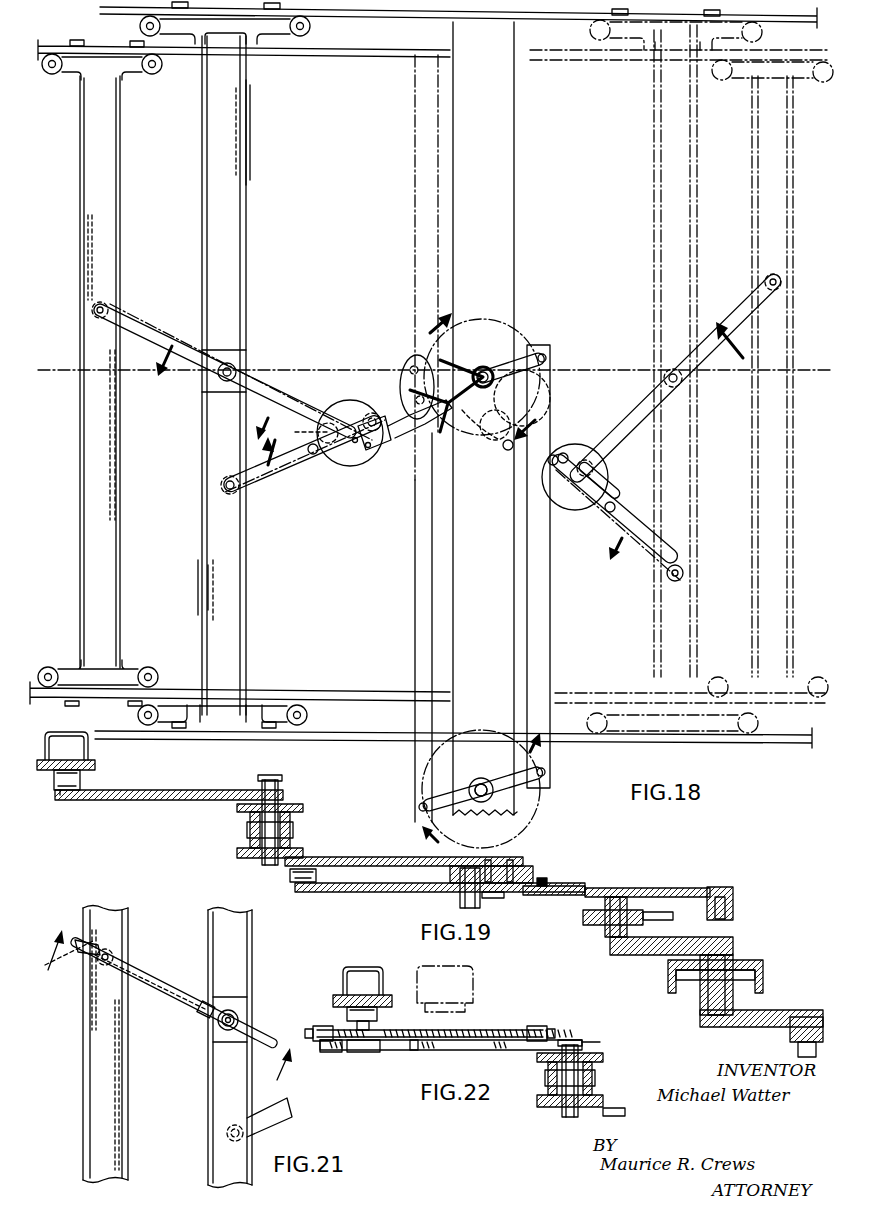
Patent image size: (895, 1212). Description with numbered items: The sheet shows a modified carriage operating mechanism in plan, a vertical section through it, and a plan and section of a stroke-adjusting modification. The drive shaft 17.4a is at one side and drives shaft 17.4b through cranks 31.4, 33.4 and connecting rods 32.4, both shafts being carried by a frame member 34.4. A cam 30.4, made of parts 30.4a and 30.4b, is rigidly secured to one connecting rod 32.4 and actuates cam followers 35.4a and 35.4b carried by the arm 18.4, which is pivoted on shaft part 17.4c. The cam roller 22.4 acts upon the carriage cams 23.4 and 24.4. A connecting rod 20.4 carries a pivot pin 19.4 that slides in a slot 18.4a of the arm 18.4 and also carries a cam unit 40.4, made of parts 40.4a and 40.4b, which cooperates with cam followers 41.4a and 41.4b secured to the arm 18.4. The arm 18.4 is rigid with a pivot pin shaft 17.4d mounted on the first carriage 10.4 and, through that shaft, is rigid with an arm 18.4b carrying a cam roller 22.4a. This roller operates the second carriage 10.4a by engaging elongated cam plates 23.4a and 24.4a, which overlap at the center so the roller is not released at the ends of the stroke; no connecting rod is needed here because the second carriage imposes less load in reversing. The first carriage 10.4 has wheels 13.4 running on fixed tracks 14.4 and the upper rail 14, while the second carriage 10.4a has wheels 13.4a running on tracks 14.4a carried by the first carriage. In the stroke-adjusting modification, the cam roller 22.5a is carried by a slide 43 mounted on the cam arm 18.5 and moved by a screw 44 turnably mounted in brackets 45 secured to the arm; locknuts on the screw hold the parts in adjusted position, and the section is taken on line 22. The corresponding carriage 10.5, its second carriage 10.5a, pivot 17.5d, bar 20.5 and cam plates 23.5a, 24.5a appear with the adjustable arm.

In FIG. 18, the upper track rail 14 is at (380, 18).
In FIG. 18, the wheels 13.4 is at (305, 30).
In FIG. 18, the wheels 13.4a is at (160, 74).
In FIG. 18, the fixed tracks 14.4 is at (345, 739).
In FIG. 18, the tracks 14.4a is at (331, 53).
In FIG. 18, the first carriage 10.4 is at (246, 543).
In FIG. 19, the first carriage 10.4 is at (293, 830).
In FIG. 18, the second carriage 10.4a is at (118, 560).
In FIG. 19, the second carriage 10.4a is at (90, 750).
In FIG. 18, the carriage cam 24.4 is at (248, 132).
In FIG. 18, the elongated cam plate 24.4a is at (92, 235).
In FIG. 19, the elongated cam plate 24.4a is at (35, 808).
In FIG. 18, the carriage cam 23.4 is at (215, 612).
In FIG. 18, the elongated cam plate 23.4a is at (120, 435).
In FIG. 19, the elongated cam plate 23.4a is at (82, 780).
In FIG. 18, the cam roller 22.4 is at (220, 488).
In FIG. 19, the cam roller 22.4 is at (316, 875).
In FIG. 18, the cam roller 22.4a is at (105, 300).
In FIG. 19, the cam roller 22.4a is at (40, 800).
In FIG. 18, the arm 18.4 is at (385, 405).
In FIG. 19, the arm 18.4 is at (645, 888).
In FIG. 18, the slot 18.4a is at (598, 478).
In FIG. 19, the slot 18.4a is at (493, 895).
In FIG. 18, the arm 18.4b is at (132, 330).
In FIG. 19, the arm 18.4b is at (160, 802).
In FIG. 18, the drive shaft 17.4a is at (505, 800).
In FIG. 18, the shaft 17.4b is at (492, 368).
In FIG. 19, the shaft 17.4b is at (735, 966).
In FIG. 18, the shaft part 17.4c is at (505, 360).
In FIG. 19, the shaft part 17.4c is at (726, 890).
In FIG. 18, the pivot pin shaft 17.4d is at (233, 368).
In FIG. 19, the pivot pin shaft 17.4d is at (276, 788).
In FIG. 18, the pivot pin 19.4 is at (585, 456).
In FIG. 19, the pivot pin 19.4 is at (460, 878).
In FIG. 18, the connecting rod 20.4 is at (277, 400).
In FIG. 19, the connecting rod 20.4 is at (362, 860).
In FIG. 18, the cam 30.4 is at (378, 460).
In FIG. 19, the cam 30.4 is at (583, 926).
In FIG. 19, the cam part 30.4a is at (583, 916).
In FIG. 19, the cam part 30.4b is at (578, 945).
In FIG. 18, the crank 31.4 is at (530, 795).
In FIG. 18, the connecting rods 32.4 is at (416, 602).
In FIG. 19, the connecting rods 32.4 is at (612, 950).
In FIG. 18, the crank 33.4 is at (506, 417).
In FIG. 19, the crank 33.4 is at (712, 946).
In FIG. 18, the frame member 34.4 is at (502, 590).
In FIG. 19, the frame member 34.4 is at (764, 976).
In FIG. 18, the cam follower 35.4a is at (412, 355).
In FIG. 18, the cam follower 35.4b is at (455, 460).
In FIG. 18, the cam unit 40.4 is at (334, 468).
In FIG. 19, the cam unit 40.4 is at (536, 876).
In FIG. 19, the cam unit part 40.4a is at (525, 868).
In FIG. 19, the cam unit part 40.4b is at (552, 890).
In FIG. 18, the cam follower 41.4a is at (310, 455).
In FIG. 19, the cam follower 41.4a is at (395, 886).
In FIG. 18, the cam follower 41.4b is at (342, 410).
In FIG. 19, the cam follower 41.4b is at (550, 881).
In FIG. 21, the column member 10.5 is at (250, 953).
In FIG. 22, the column member 10.5 is at (595, 1083).
In FIG. 21, the column member 10.5a is at (84, 1060).
In FIG. 22, the column member 10.5a is at (350, 968).
In FIG. 21, the pivot 17.5d is at (236, 1014).
In FIG. 22, the pivot 17.5d is at (565, 1048).
In FIG. 21, the link arm 18.5 is at (292, 1115).
In FIG. 22, the link arm 18.5 is at (478, 1052).
In FIG. 22, the bar 20.5 is at (318, 1045).
In FIG. 21, the section line 22 is at (170, 1014).
In FIG. 21, the cam roller 22.5a is at (130, 945).
In FIG. 21, the guide 23.5a is at (100, 905).
In FIG. 21, the slot 24.5a is at (120, 1107).
In FIG. 22, the slot 24.5a is at (377, 1012).
In FIG. 22, the slide 43 is at (365, 1052).
In FIG. 21, the screw 44 is at (152, 976).
In FIG. 22, the screw 44 is at (480, 1029).
In FIG. 21, the brackets 45 is at (203, 1014).
In FIG. 22, the brackets 45 is at (325, 1026).